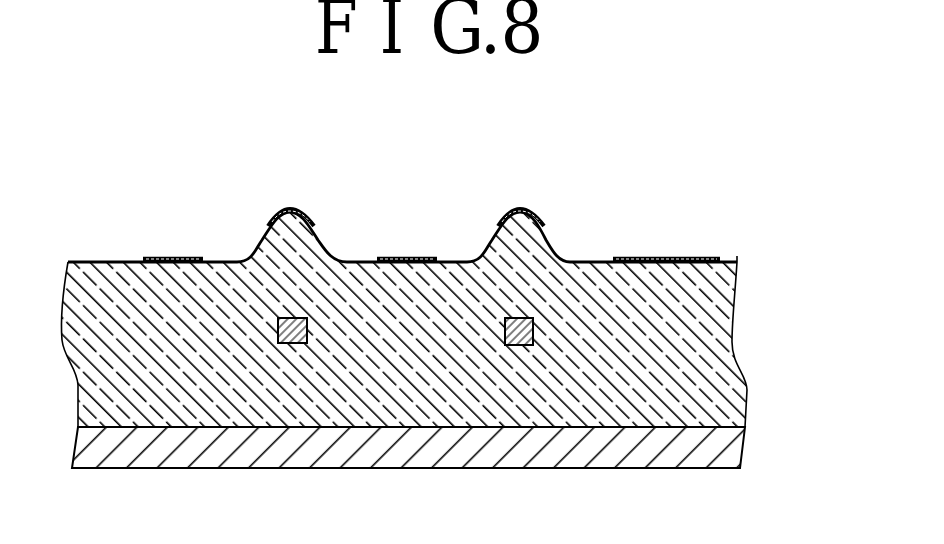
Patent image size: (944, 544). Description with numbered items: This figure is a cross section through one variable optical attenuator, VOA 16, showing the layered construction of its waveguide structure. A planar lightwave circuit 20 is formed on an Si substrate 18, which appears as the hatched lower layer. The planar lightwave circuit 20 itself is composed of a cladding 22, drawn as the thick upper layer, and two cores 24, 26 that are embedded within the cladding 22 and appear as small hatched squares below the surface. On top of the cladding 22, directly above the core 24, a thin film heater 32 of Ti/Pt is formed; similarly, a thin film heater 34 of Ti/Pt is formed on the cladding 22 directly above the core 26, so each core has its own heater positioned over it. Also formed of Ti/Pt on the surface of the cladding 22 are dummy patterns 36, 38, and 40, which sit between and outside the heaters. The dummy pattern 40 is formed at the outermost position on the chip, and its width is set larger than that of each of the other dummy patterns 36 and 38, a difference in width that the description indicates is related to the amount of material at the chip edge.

The VOA 16 is at (602, 186).
The Si substrate 18 is at (738, 446).
The planar lightwave circuit 20 is at (742, 271).
The cladding 22 is at (718, 345).
The core 24 is at (292, 343).
The core 26 is at (519, 345).
The thin film heater 32 is at (292, 207).
The thin film heater 34 is at (522, 207).
The dummy pattern 36 is at (174, 257).
The dummy pattern 38 is at (405, 257).
The dummy pattern 40 is at (676, 257).